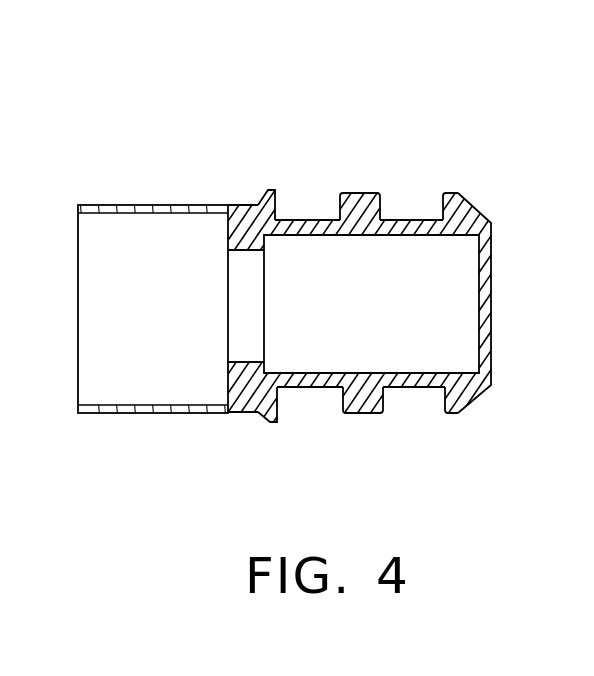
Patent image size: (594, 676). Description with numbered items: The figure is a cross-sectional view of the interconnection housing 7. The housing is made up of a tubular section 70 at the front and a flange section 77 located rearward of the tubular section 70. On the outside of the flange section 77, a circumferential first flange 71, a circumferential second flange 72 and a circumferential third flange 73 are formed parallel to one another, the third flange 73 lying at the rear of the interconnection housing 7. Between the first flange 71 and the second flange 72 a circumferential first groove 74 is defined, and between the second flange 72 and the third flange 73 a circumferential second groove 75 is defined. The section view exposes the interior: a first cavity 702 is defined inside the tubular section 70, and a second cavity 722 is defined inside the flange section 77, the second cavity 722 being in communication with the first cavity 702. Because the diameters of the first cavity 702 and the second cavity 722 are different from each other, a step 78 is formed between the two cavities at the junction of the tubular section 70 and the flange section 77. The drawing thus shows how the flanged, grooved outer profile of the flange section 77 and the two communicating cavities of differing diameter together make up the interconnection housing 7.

The interconnection housing 7 is at (176, 204).
The tubular section 70 is at (133, 412).
The first cavity 702 is at (197, 383).
The flange section 77 is at (183, 78).
The step 78 is at (226, 205).
The first flange 71 is at (262, 192).
The first groove 74 is at (302, 218).
The second flange 72 is at (370, 196).
The second groove 75 is at (418, 216).
The third flange 73 is at (477, 208).
The second cavity 722 is at (411, 348).